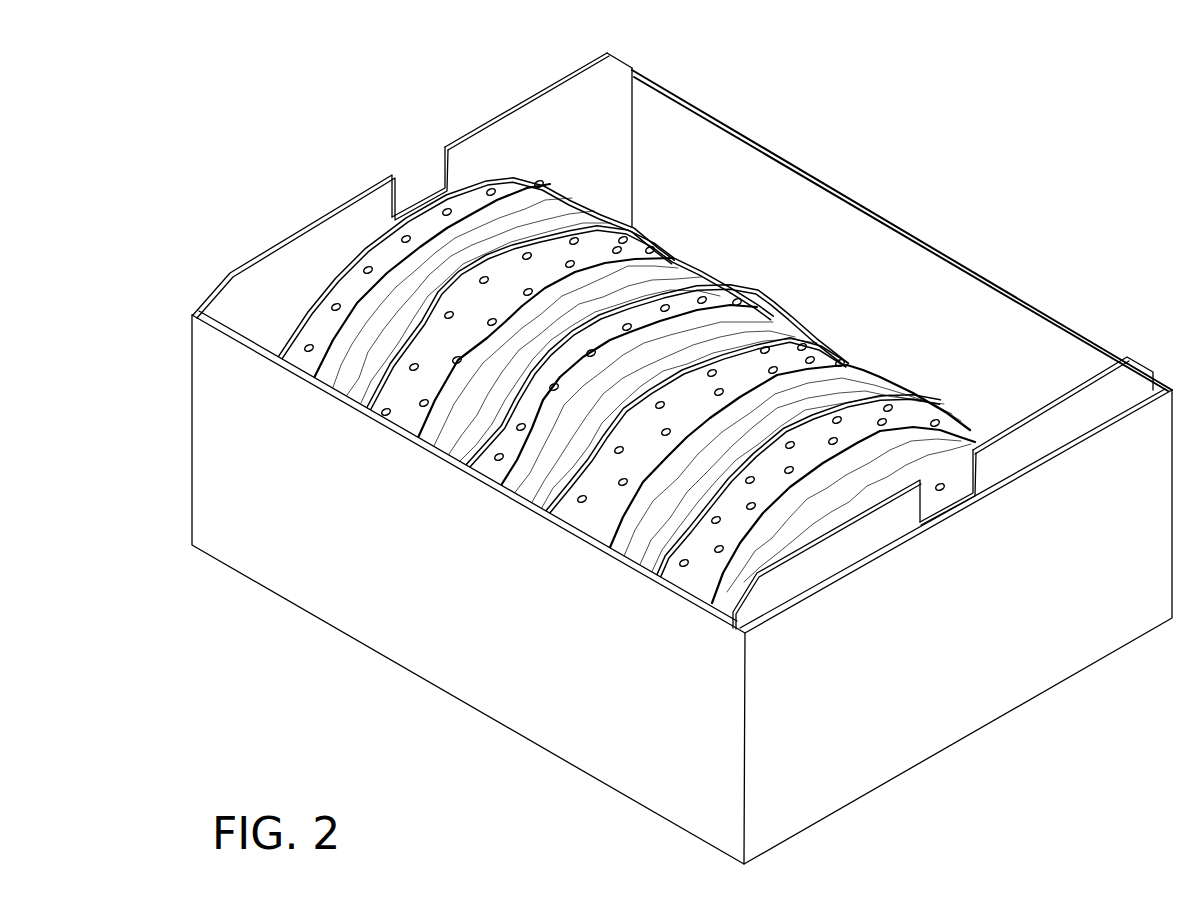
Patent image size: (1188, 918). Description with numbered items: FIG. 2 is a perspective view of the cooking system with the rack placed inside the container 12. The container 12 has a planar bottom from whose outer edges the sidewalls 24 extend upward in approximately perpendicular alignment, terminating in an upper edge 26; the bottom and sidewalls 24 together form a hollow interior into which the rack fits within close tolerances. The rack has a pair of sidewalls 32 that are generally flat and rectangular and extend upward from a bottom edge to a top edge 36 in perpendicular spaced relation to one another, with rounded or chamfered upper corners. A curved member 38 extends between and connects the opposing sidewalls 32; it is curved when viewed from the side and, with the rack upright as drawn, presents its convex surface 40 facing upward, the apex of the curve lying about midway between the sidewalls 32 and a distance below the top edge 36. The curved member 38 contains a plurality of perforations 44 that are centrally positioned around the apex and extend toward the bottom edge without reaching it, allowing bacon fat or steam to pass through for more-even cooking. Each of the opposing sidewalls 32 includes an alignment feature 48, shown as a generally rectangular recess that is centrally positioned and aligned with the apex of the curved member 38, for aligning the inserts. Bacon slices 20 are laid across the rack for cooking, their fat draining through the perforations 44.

The container 12 is at (192, 396).
The bacon slices 20 is at (883, 380).
The sidewalls 24 is at (822, 270).
The upper edge 26 is at (947, 255).
The sidewalls 32 is at (272, 263).
The top edge 36 is at (505, 112).
The curved member 38 is at (517, 192).
The convex surface 40 is at (657, 430).
The perforations 44 is at (640, 250).
The alignment features 48 is at (442, 158).